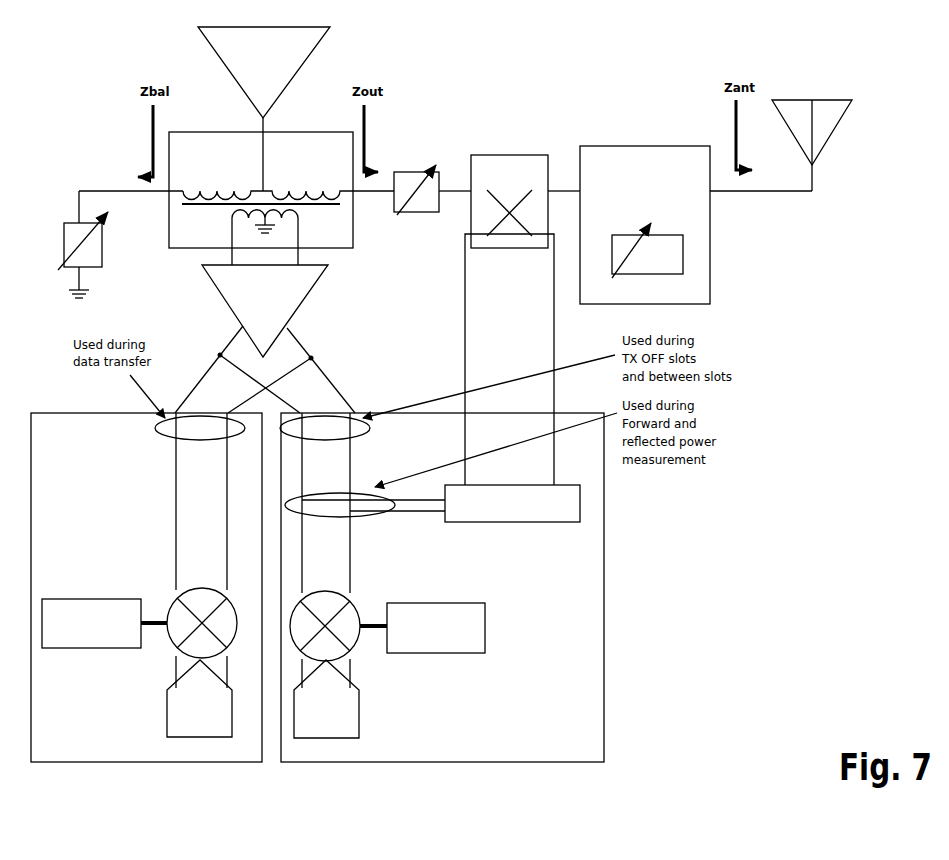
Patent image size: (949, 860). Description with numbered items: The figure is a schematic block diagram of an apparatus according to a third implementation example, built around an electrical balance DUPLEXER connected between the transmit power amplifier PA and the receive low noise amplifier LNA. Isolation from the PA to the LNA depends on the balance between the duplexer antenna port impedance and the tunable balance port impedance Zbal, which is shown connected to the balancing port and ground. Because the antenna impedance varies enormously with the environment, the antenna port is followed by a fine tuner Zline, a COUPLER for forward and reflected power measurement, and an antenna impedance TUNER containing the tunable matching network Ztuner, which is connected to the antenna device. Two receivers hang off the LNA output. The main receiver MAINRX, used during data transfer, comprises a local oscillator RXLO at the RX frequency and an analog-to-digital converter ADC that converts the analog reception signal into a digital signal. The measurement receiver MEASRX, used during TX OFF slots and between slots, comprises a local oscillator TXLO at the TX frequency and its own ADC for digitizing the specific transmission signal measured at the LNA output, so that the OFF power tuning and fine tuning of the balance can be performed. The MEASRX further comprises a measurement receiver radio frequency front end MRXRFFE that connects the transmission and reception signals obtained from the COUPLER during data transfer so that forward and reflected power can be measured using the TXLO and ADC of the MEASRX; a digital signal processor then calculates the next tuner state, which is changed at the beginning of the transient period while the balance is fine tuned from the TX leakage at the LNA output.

The power amplifier PA is at (264, 72).
The electrical balance duplexer DUPLEXER is at (261, 190).
The low noise amplifier LNA is at (265, 311).
The balance port impedance Zbal is at (83, 241).
The fine tuner Zline is at (416, 190).
The coupler COUPLER is at (509, 320).
The antenna impedance tuner TUNER is at (645, 225).
The tunable matching network impedance Ztuner is at (647, 250).
The main receiver MAINRX is at (146, 587).
The local oscillator at RX frequency RXLO is at (91, 623).
The analog-to-digital converter ADC is at (199, 698).
The measurement receiver MEASRX is at (442, 587).
The local oscillator at TX frequency TXLO is at (436, 628).
The MRX RFFE MRXRFFE is at (512, 503).